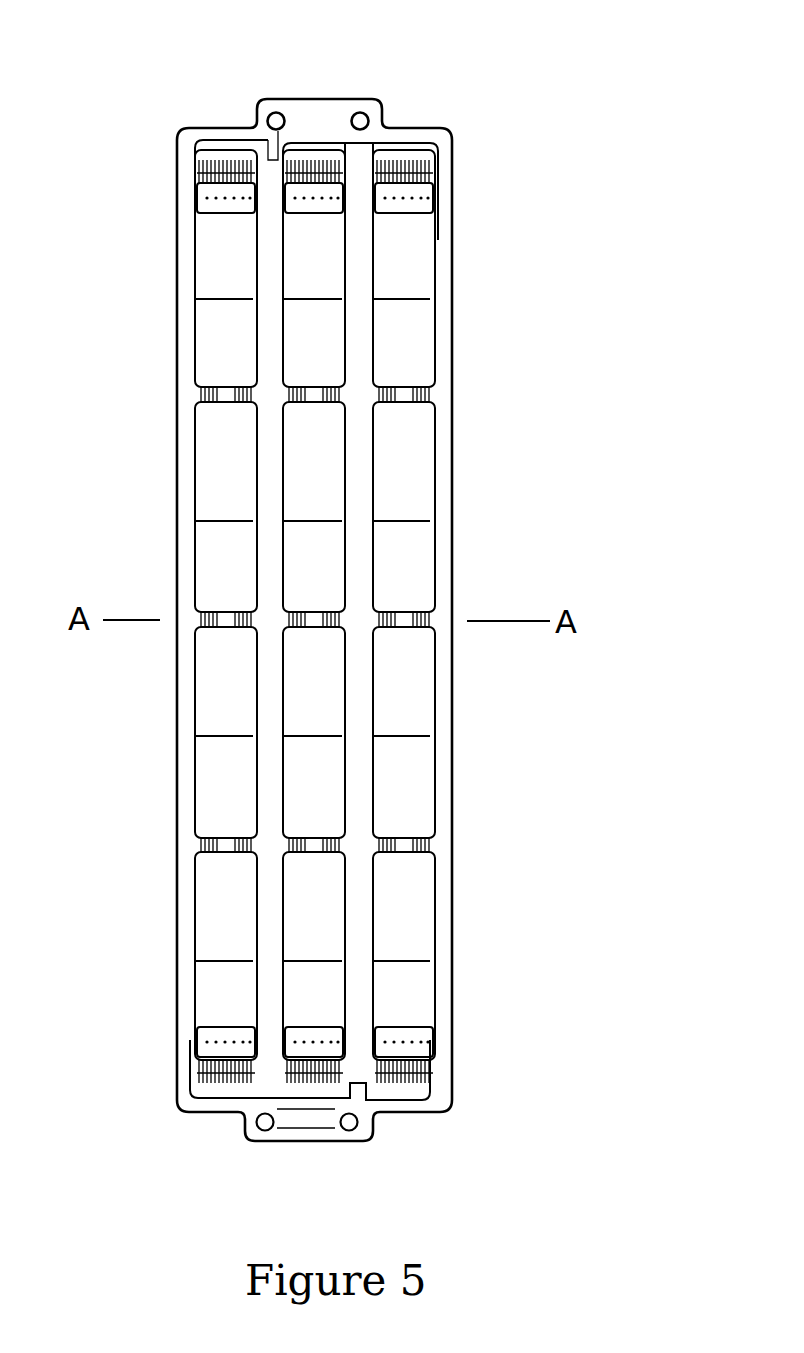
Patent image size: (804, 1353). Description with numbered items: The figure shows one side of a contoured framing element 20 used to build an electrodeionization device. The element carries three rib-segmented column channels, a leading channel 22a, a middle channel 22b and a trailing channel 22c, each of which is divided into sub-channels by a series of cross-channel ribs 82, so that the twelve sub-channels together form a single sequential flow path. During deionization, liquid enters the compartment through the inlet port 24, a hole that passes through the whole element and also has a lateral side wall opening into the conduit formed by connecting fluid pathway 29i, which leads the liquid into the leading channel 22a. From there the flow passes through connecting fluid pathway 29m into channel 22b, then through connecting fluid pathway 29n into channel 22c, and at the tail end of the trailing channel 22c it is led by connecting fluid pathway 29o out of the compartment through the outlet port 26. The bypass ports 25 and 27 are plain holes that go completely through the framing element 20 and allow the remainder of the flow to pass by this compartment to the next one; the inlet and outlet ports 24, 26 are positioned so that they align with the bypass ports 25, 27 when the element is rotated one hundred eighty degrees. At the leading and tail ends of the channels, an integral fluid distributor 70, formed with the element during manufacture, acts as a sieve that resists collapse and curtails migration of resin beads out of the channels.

The contoured framing element 20 is at (494, 138).
The leading channel 22a is at (226, 616).
The channel 22b is at (314, 616).
The trailing channel 22c is at (404, 616).
The inlet port 24 is at (272, 112).
The bypass port 25 is at (360, 111).
The outlet port 26 is at (265, 1132).
The bypass port 27 is at (350, 1132).
The connecting fluid pathway 29i is at (222, 150).
The connecting fluid pathway 29n is at (413, 157).
The connecting fluid pathway 29m is at (225, 1087).
The connecting fluid pathway 29o is at (408, 1090).
The integral fluid distributor 70 is at (222, 213).
The cross-channel ribs 82 is at (227, 403).